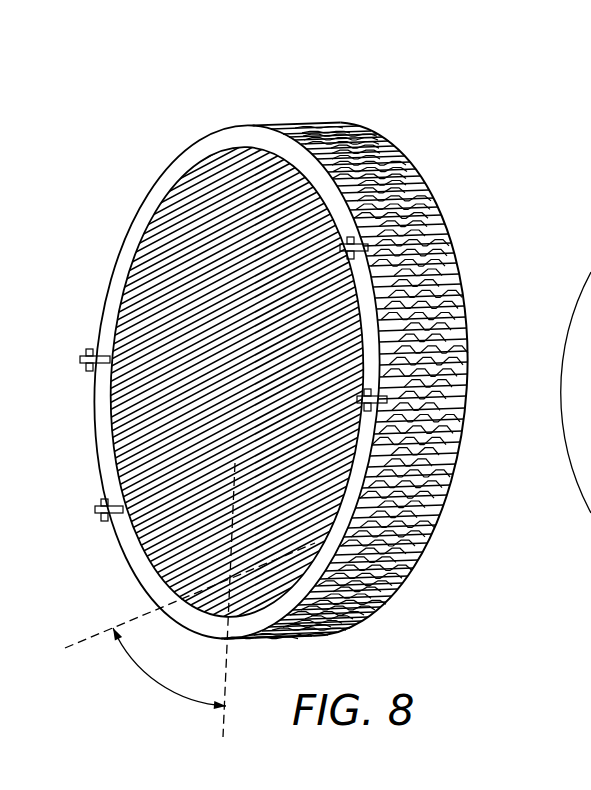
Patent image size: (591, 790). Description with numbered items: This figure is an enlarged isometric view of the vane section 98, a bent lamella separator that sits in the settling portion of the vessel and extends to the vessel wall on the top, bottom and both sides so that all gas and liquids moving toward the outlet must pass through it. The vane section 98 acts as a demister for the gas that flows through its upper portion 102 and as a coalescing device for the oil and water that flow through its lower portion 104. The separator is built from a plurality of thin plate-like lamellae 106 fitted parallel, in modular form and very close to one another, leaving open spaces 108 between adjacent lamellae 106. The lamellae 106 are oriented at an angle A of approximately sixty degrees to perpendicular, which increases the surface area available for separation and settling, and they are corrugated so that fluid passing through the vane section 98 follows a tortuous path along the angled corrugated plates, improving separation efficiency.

The vane section 98 is at (420, 165).
The upper portion 102 is at (230, 187).
The lower portion 104 is at (307, 443).
The lamellae 106 is at (443, 237).
The open spaces 108 is at (450, 265).
The angle A is at (157, 686).